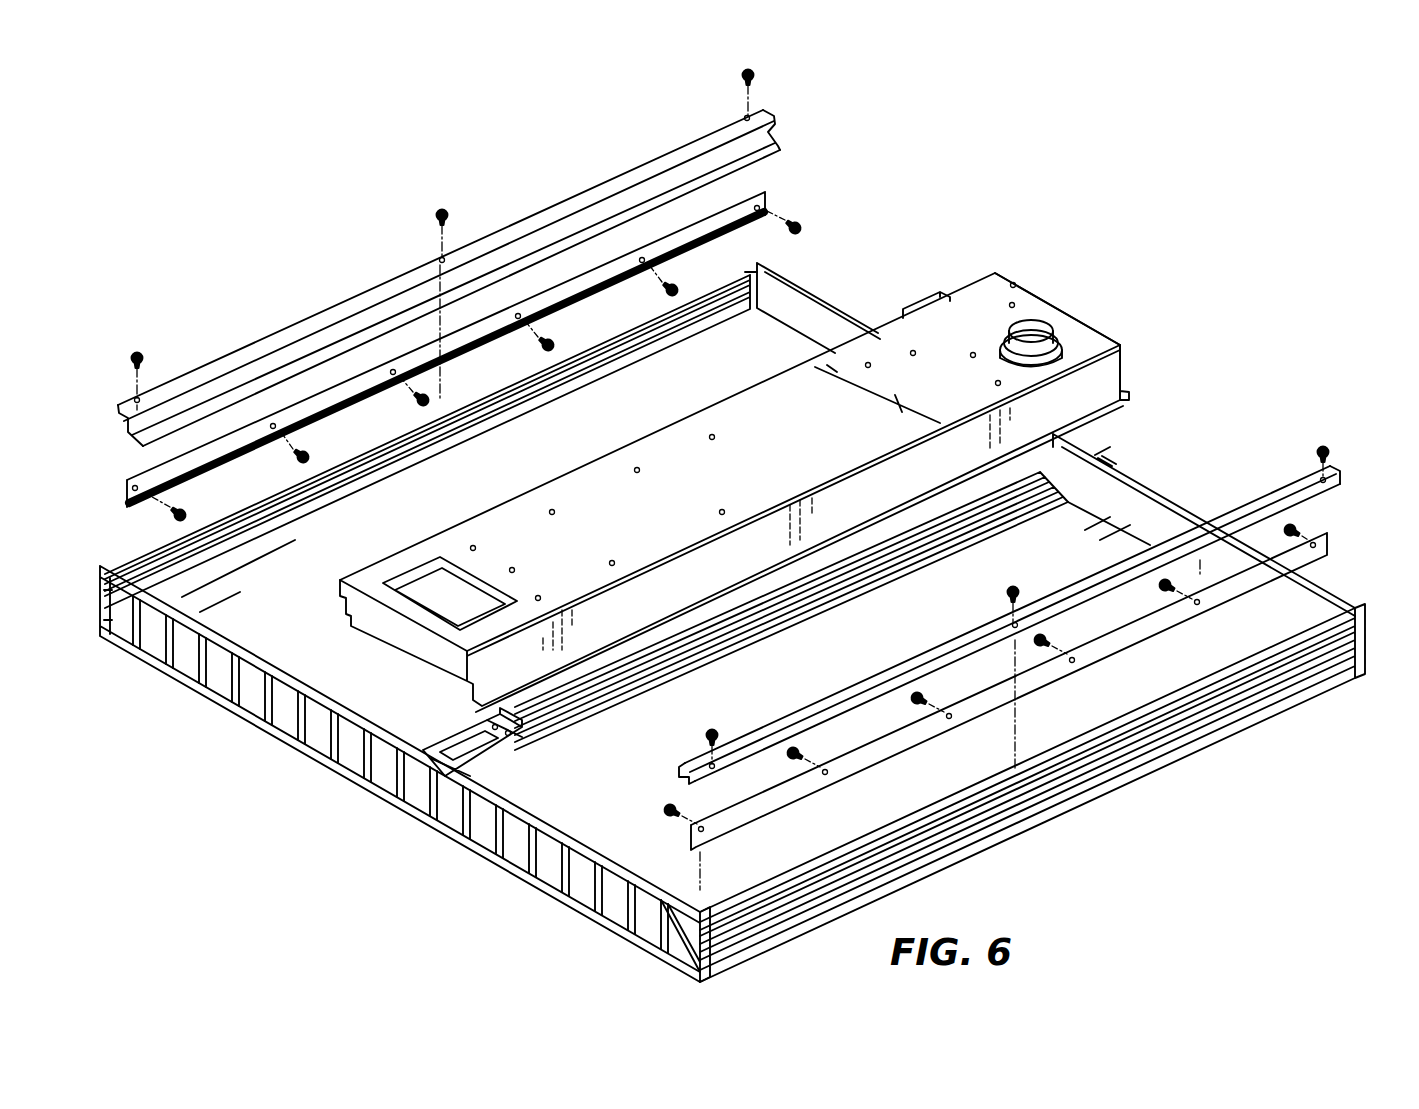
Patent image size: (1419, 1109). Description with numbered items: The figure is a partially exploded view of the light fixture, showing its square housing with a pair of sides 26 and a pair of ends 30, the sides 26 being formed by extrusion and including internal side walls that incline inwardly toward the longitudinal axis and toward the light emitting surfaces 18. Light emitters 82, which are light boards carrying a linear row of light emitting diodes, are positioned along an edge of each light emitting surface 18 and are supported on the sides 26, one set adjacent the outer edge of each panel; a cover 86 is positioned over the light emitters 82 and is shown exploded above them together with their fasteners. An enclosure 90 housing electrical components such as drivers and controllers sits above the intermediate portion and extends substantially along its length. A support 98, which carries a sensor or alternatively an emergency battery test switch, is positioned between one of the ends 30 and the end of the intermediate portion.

The light emitting surfaces 18 is at (317, 648).
The sides 26 is at (745, 275).
The ends 30 is at (1132, 512).
The light emitters 82 is at (766, 206).
The cover 86 is at (766, 134).
The enclosure 90 is at (1085, 346).
The support 98 is at (508, 774).